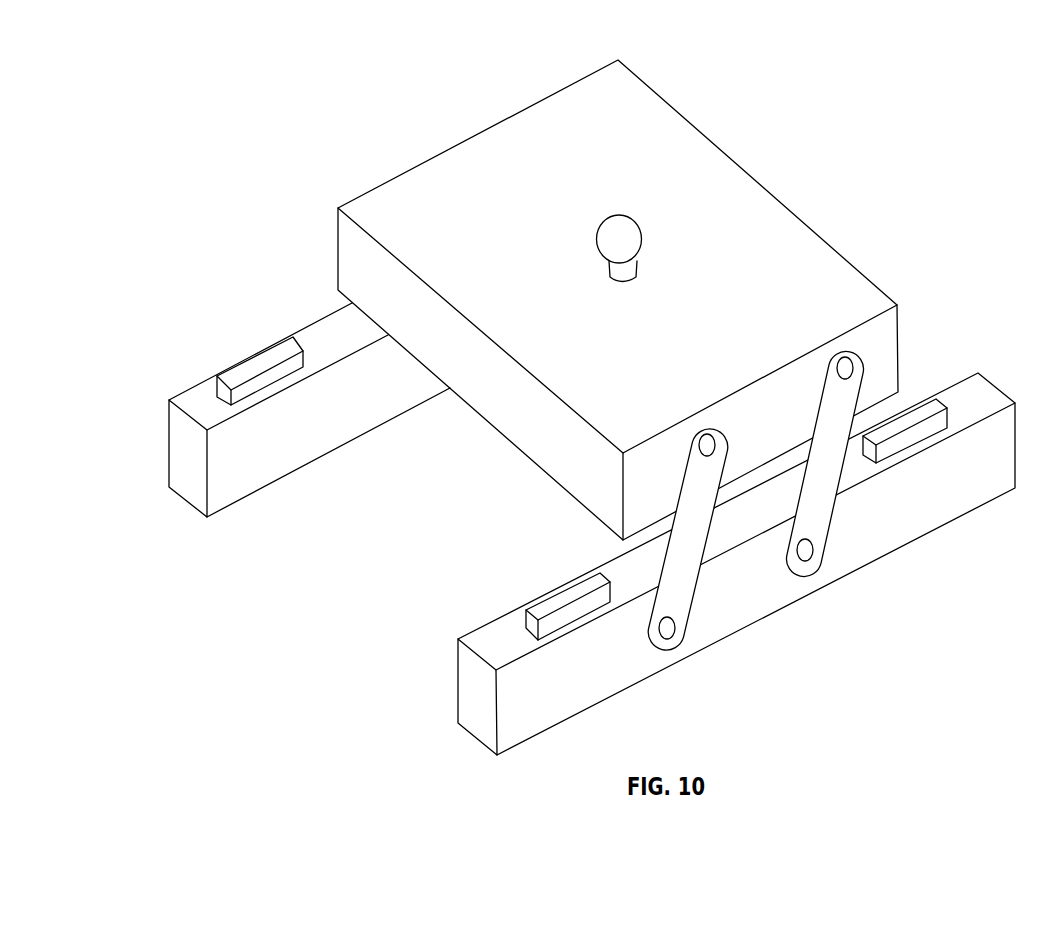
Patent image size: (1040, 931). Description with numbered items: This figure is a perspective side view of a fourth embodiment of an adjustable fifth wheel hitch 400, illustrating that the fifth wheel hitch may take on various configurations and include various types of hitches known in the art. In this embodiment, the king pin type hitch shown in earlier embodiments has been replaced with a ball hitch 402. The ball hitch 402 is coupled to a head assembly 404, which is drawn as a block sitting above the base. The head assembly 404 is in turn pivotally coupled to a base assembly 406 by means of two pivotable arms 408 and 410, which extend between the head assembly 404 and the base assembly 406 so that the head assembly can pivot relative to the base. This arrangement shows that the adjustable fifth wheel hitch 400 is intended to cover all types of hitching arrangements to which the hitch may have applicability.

The adjustable fifth wheel hitch 400 is at (857, 175).
The ball hitch 402 is at (620, 228).
The head assembly 404 is at (825, 275).
The base assembly 406 is at (918, 520).
The pivotable arm 408 is at (685, 537).
The pivotable arm 410 is at (840, 405).